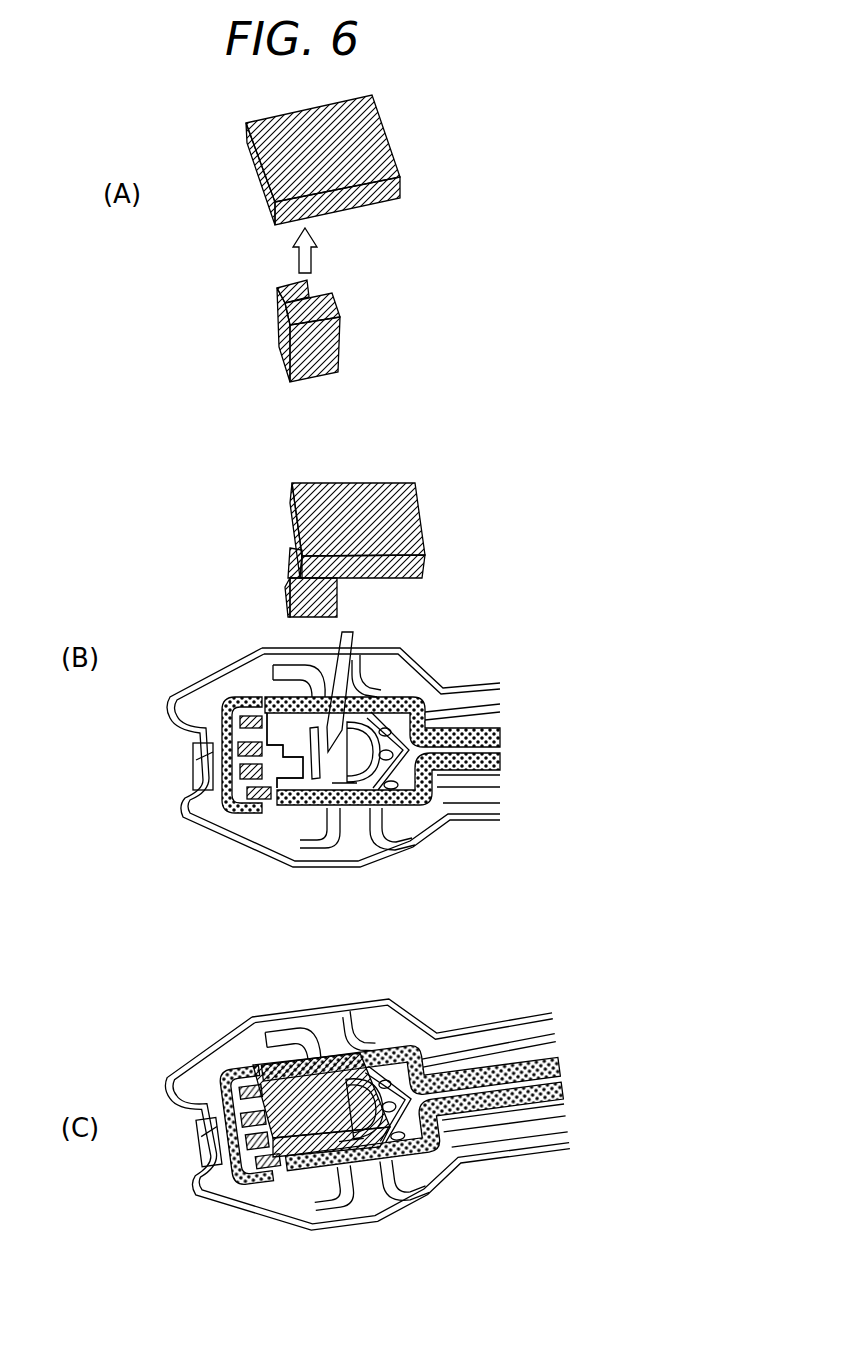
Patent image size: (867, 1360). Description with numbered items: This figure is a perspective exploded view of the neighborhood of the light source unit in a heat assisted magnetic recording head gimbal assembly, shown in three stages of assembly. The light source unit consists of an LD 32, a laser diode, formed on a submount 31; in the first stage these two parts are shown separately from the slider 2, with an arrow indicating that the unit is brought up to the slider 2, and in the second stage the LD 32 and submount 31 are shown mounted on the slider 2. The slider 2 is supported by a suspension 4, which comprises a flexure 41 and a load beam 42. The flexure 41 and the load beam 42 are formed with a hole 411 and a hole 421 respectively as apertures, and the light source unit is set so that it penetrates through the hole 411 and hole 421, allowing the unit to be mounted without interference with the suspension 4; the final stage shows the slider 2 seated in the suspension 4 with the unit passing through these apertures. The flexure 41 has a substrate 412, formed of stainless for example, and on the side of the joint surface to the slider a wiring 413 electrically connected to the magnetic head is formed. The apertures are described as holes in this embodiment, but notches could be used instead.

The slider 2 is at (372, 96).
The submount 31 is at (313, 380).
The LD (laser diode) 32 is at (284, 283).
The suspension 4 is at (248, 818).
The flexure 41 is at (244, 692).
The substrate 412 is at (297, 738).
The wiring 413 is at (413, 698).
The hole 411 is at (233, 753).
The hole 421 is at (181, 762).
The load beam 42 is at (440, 807).